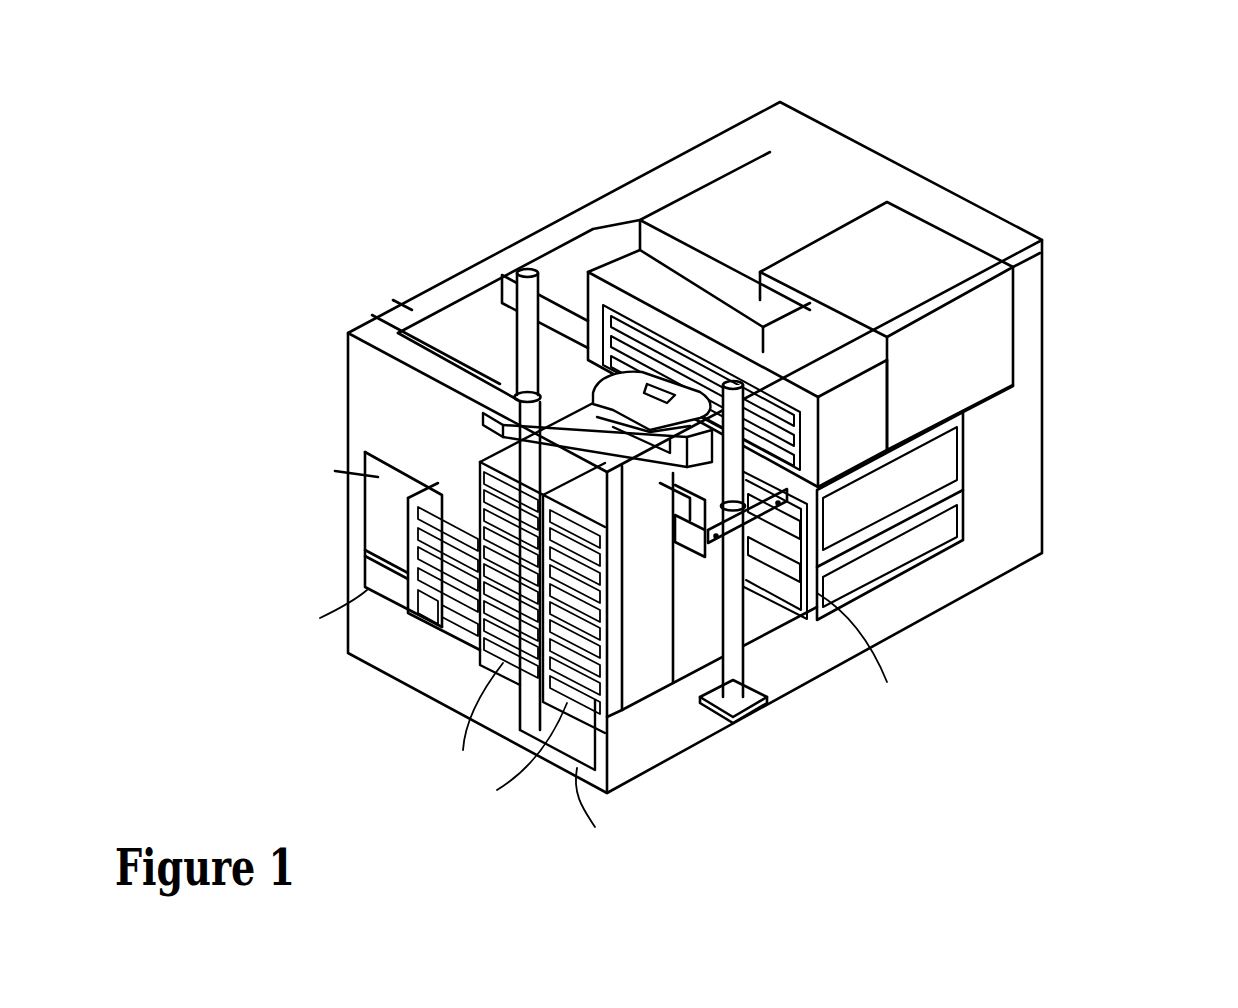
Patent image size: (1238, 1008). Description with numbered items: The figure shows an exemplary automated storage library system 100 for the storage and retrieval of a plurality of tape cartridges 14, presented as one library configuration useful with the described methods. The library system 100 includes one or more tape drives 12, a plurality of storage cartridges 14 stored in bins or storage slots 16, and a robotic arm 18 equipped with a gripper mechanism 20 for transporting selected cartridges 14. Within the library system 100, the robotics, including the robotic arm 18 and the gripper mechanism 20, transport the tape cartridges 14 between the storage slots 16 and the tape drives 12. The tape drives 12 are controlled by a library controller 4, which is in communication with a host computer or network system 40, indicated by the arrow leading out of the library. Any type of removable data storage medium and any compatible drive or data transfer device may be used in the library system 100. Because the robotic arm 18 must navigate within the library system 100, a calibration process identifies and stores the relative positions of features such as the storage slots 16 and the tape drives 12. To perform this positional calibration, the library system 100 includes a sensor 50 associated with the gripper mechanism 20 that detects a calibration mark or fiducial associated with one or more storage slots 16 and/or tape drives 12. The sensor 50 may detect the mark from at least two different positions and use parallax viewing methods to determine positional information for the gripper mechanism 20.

The automated storage library system 100 is at (752, 92).
The library controller 4 is at (914, 215).
The storage slots 16 is at (803, 345).
The tape cartridges 14 is at (427, 617).
The tape drives 12 is at (887, 568).
The gripper mechanism 20 is at (520, 345).
The sensor 50 is at (667, 387).
The robotic arm 18 is at (702, 575).
The host computer or network system 40 is at (985, 330).